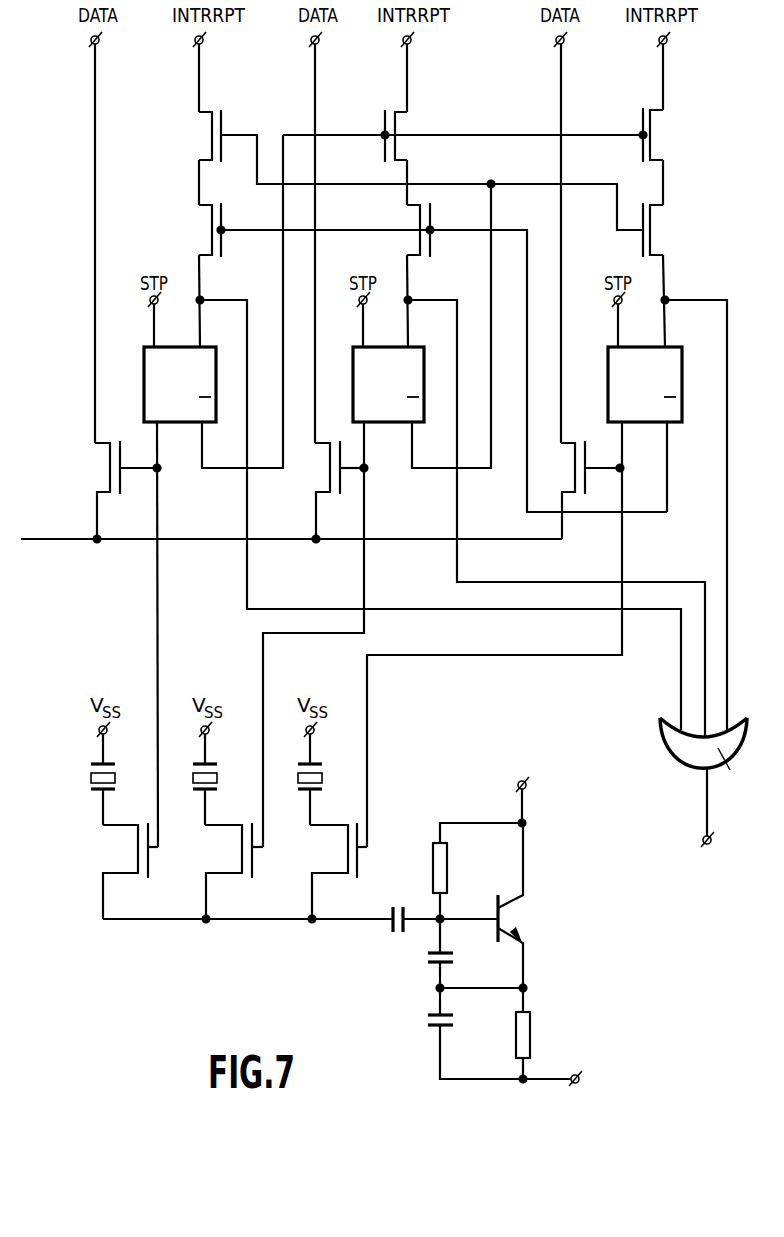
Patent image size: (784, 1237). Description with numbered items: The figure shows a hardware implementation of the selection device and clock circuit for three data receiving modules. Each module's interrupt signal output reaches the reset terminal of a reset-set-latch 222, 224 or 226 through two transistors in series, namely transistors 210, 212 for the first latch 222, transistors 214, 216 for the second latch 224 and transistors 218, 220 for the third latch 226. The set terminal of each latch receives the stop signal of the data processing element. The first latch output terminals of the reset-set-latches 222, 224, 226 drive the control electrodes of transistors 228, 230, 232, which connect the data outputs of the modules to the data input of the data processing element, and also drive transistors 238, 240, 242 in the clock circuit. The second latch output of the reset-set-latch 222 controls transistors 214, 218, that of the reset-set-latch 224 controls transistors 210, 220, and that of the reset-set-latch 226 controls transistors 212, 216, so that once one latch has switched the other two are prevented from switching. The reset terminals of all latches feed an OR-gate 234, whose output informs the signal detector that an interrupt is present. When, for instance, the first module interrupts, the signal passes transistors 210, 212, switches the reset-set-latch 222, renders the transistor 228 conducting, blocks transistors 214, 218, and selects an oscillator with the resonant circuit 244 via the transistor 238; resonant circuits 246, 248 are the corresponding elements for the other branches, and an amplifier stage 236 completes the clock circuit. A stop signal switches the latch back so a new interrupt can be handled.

The transistor 210 is at (212, 126).
The transistor 212 is at (199, 248).
The transistor 214 is at (396, 127).
The transistor 216 is at (420, 246).
The transistor 218 is at (652, 124).
The transistor 220 is at (655, 246).
The reset-set-latch 222 is at (144, 382).
The reset-set-latch 224 is at (353, 386).
The reset-set-latch 226 is at (608, 386).
The transistor 228 is at (109, 493).
The transistor 230 is at (328, 478).
The transistor 232 is at (573, 492).
The OR-gate 234 is at (668, 748).
The amplifier circuit 236 is at (577, 963).
The transistor 238 is at (139, 867).
The transistor 240 is at (244, 867).
The transistor 242 is at (349, 867).
The resonant circuit 244 is at (116, 778).
The crystal 246 is at (218, 778).
The crystal 248 is at (323, 778).